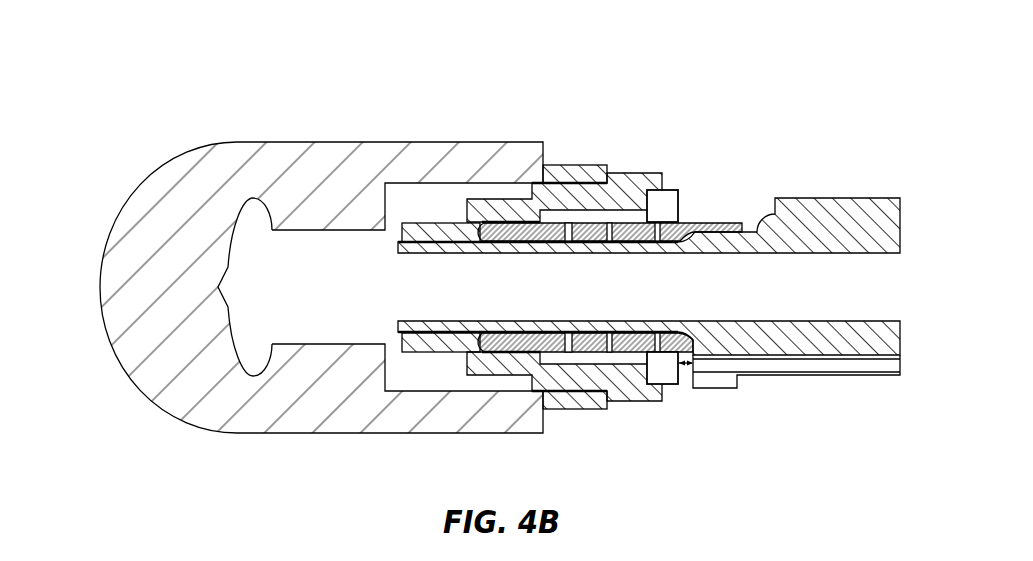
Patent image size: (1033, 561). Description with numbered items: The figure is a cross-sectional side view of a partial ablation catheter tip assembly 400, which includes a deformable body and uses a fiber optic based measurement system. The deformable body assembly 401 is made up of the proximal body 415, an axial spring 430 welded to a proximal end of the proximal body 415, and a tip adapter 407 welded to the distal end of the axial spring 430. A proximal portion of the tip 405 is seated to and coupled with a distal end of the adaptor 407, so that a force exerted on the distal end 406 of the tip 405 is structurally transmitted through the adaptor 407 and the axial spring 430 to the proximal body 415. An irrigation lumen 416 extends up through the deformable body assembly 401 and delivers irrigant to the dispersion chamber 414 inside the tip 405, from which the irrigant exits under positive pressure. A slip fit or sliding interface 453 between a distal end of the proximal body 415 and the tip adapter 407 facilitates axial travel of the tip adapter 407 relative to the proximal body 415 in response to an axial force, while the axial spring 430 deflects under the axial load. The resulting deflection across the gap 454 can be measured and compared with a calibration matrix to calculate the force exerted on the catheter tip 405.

The partial ablation catheter tip assembly 400 is at (258, 62).
The deformable body assembly 401 is at (649, 323).
The tip 405 is at (405, 142).
The distal end 406 is at (85, 356).
The tip adapter 407 is at (629, 197).
The dispersion chamber 414 is at (312, 308).
The proximal body 415 is at (835, 378).
The irrigation lumen 416 is at (823, 275).
The axial spring 430 is at (721, 221).
The sliding interface 453 is at (578, 183).
The gap 454 is at (683, 368).